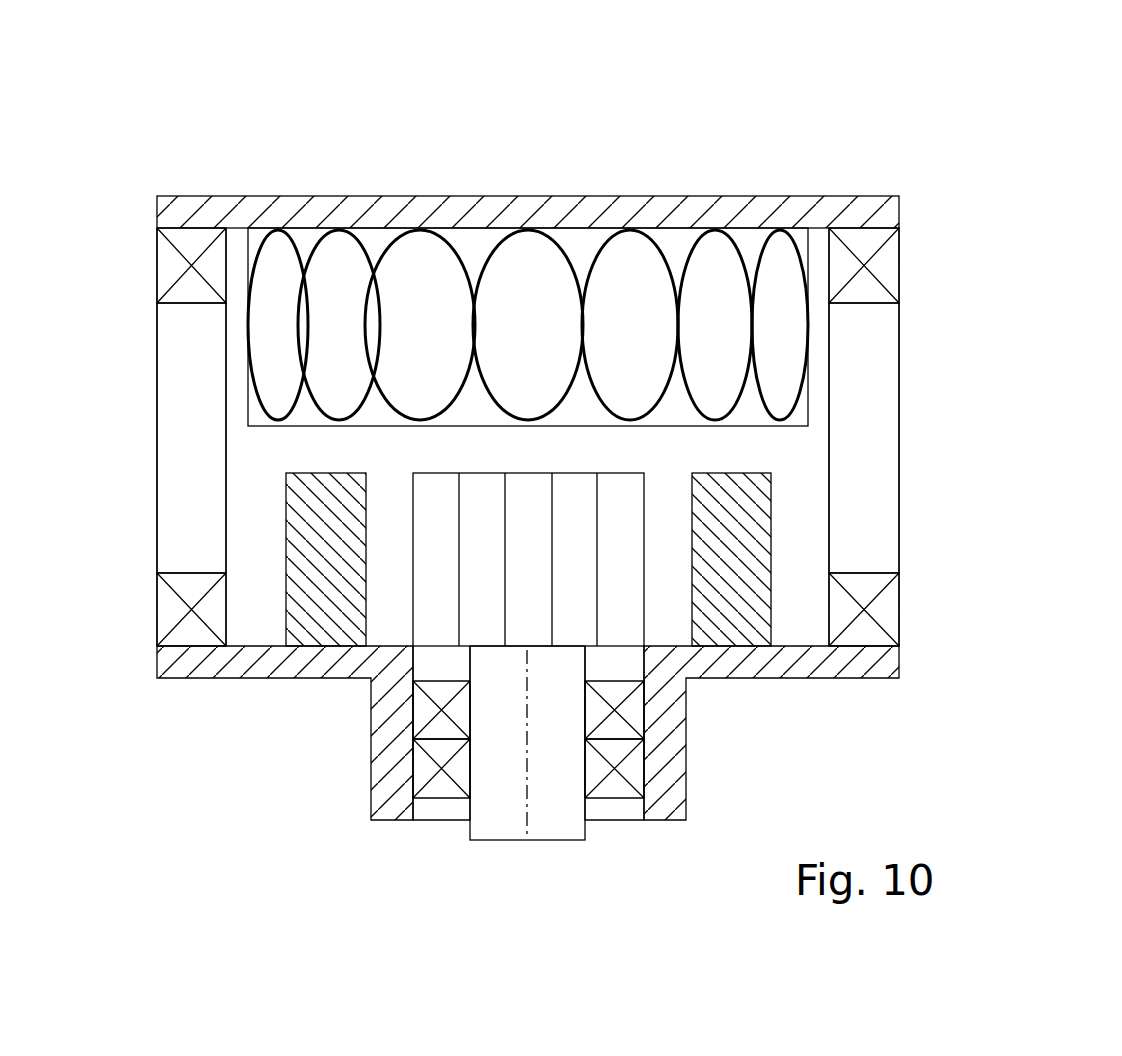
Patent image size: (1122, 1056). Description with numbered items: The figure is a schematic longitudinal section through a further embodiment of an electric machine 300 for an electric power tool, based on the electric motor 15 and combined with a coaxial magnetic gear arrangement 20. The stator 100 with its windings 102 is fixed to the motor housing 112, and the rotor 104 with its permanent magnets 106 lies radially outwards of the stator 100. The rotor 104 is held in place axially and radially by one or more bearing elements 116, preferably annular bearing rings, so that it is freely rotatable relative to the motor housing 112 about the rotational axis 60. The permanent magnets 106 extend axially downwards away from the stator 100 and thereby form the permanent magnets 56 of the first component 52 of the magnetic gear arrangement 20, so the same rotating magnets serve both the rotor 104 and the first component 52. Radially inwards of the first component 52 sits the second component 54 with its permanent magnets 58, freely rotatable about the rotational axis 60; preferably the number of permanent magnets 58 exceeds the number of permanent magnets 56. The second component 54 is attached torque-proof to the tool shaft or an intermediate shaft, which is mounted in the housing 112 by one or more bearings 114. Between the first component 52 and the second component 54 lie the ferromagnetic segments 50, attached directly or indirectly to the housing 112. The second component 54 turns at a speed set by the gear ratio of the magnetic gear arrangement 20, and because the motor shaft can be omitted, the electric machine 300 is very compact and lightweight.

The electric machine 300 is at (798, 94).
The electric motor 15 is at (914, 150).
The coaxial magnetic gear arrangement 20 is at (124, 627).
The bearing elements 116 is at (195, 238).
The windings 102 is at (342, 250).
The motor housing 112 is at (461, 197).
The stator 100 is at (528, 274).
The rotor 104 is at (527, 386).
The permanent magnets 106 is at (527, 438).
The first component 52 is at (527, 438).
The permanent magnets 56 is at (162, 531).
The permanent magnets 58 is at (528, 495).
The second component 54 is at (555, 537).
The ferromagnetic segments 50 is at (335, 634).
The bearings 114 is at (438, 800).
The rotational axis 60 is at (525, 815).